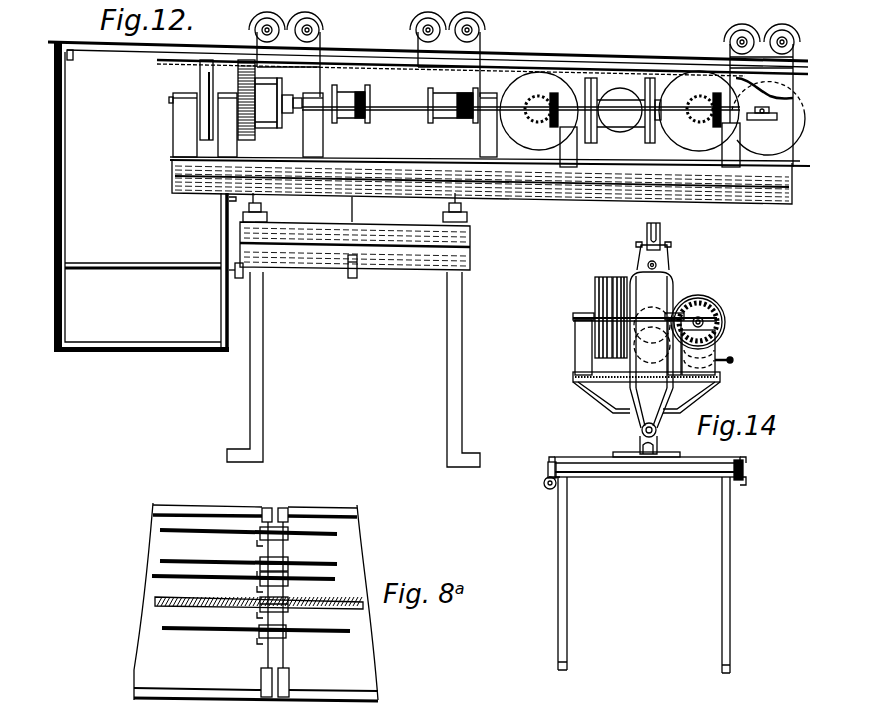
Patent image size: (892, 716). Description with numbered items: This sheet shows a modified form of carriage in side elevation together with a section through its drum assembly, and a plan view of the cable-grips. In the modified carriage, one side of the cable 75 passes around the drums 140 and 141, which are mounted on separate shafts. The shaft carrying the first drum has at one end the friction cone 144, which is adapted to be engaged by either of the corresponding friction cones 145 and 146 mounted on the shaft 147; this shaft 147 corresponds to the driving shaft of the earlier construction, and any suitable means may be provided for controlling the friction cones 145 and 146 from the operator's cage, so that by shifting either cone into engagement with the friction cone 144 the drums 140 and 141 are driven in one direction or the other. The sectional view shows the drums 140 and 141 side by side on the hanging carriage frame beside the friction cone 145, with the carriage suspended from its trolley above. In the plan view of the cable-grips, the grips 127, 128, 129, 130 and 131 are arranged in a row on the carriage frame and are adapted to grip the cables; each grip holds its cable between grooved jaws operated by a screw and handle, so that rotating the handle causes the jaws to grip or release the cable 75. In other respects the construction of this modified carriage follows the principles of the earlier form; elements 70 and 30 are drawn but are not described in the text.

In FIG. 12, the drum 140 is at (525, 82).
In FIG. 14, the drum 140 is at (618, 280).
In FIG. 12, the drum 141 is at (693, 80).
In FIG. 14, the drum 141 is at (598, 294).
In FIG. 12, the friction cone 144 is at (618, 88).
In FIG. 14, the friction cone 144 is at (676, 302).
In FIG. 12, the friction cone 145 is at (588, 130).
In FIG. 14, the friction cone 145 is at (726, 316).
In FIG. 12, the friction cone 146 is at (647, 135).
In FIG. 12, the shaft 147 is at (392, 111).
In FIG. 8A, the cable-grip 127 is at (287, 529).
In FIG. 8A, the cable-grip 128 is at (288, 560).
In FIG. 8A, the cable-grip 129 is at (287, 582).
In FIG. 8A, the cable-grip 130 is at (287, 613).
In FIG. 8A, the cable-grip 131 is at (285, 638).
In FIG. 8A, the cable 75 is at (172, 533).
In FIG. 8A, the wire 70 is at (162, 574).
In FIG. 8A, the cable 30 is at (156, 601).